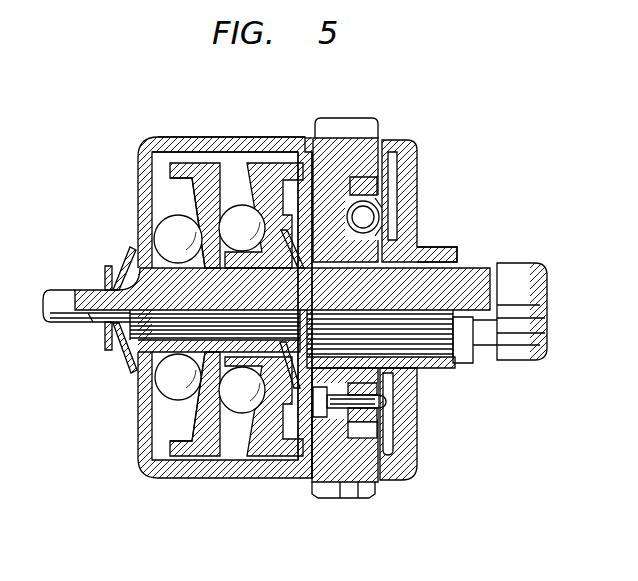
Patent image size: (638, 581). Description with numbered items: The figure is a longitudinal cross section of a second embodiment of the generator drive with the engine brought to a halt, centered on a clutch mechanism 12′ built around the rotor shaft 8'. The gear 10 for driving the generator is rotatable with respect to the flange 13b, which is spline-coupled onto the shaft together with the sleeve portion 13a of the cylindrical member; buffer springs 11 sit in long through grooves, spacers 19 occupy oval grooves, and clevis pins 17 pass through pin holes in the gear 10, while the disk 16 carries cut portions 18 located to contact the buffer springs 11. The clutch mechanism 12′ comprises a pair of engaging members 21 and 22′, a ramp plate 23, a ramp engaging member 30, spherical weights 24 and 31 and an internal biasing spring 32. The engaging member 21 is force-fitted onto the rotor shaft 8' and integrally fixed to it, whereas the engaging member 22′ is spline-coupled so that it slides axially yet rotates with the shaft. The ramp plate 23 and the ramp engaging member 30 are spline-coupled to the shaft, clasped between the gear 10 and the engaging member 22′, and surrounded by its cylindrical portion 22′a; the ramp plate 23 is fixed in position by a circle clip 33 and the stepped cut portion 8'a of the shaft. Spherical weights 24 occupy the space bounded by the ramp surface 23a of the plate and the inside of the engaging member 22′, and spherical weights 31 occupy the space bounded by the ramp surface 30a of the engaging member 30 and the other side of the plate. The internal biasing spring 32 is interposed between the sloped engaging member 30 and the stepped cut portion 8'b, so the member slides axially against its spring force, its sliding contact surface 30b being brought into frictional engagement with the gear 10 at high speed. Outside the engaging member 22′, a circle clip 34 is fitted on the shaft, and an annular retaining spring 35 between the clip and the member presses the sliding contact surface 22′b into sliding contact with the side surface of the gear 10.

The clutch mechanism 12′ is at (80, 140).
The engaging member 22′ is at (146, 462).
The cylindrical portion 22′a is at (183, 137).
The sliding contact surface 22′b is at (306, 150).
The rotor shaft 8' is at (333, 315).
The stepped cut portion 8'a is at (237, 308).
The stepped cut portion 8'b is at (345, 279).
The gear for driving the generator 10 is at (365, 121).
The buffer springs 11 is at (396, 141).
The cut portions 18 is at (382, 230).
The sleeve portion 13a is at (410, 258).
The flange 13b is at (360, 484).
The clevis pins 17 is at (378, 402).
The disk 16 is at (400, 420).
The spacers 19 is at (380, 450).
The engaging member 21 is at (406, 476).
The ramp plate 23 is at (185, 450).
The ramp surface 23a is at (190, 205).
The spherical weights 24 is at (165, 380).
The ramp engaging member 30 is at (262, 460).
The ramp surface 30a is at (245, 170).
The sliding contact surface 30b is at (332, 484).
The spherical weights 31 is at (236, 396).
The internal biasing spring 32 is at (290, 440).
The circle clip 33 is at (185, 246).
The circle clip 34 is at (105, 340).
The annular retaining spring 35 is at (124, 355).